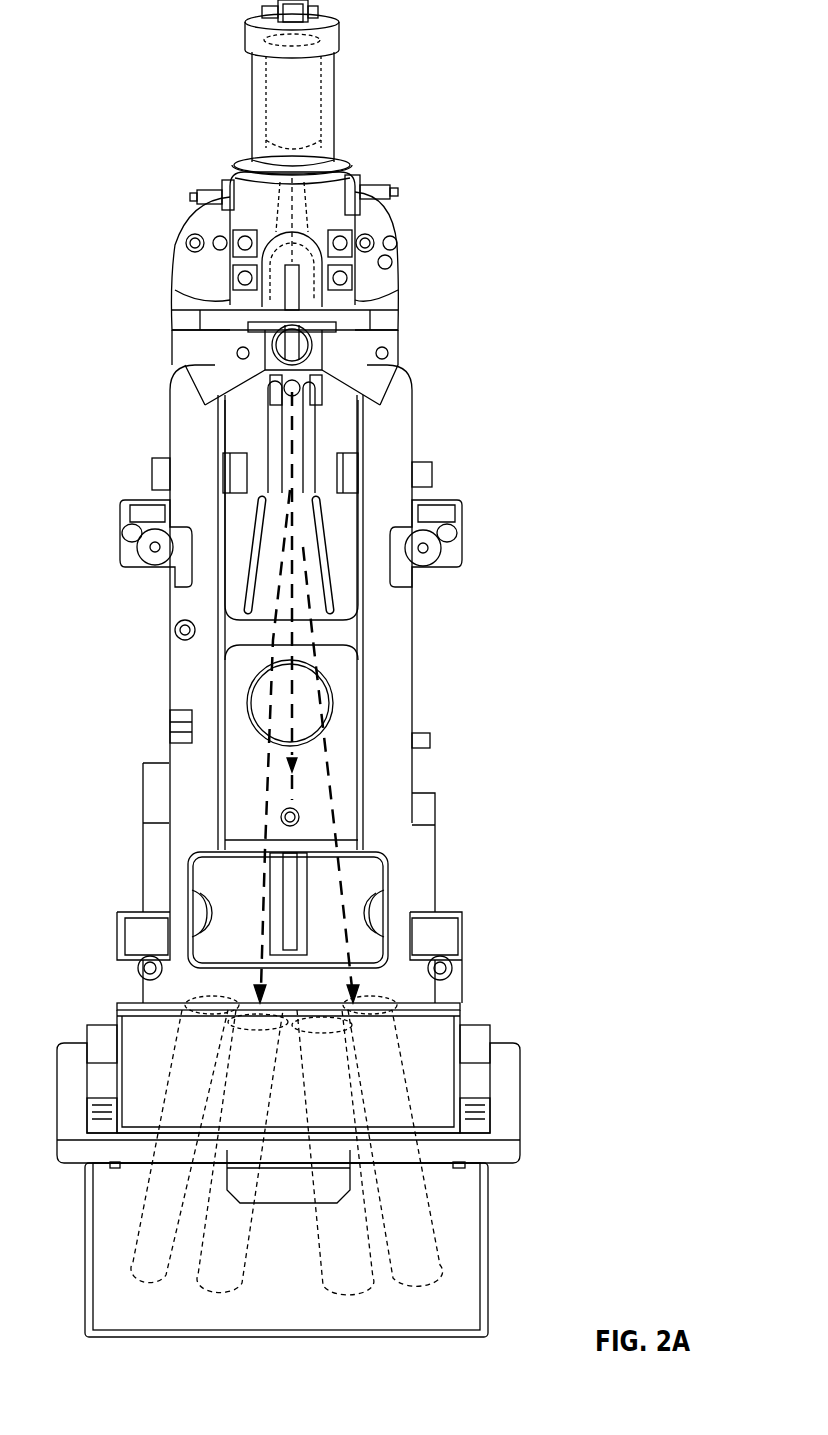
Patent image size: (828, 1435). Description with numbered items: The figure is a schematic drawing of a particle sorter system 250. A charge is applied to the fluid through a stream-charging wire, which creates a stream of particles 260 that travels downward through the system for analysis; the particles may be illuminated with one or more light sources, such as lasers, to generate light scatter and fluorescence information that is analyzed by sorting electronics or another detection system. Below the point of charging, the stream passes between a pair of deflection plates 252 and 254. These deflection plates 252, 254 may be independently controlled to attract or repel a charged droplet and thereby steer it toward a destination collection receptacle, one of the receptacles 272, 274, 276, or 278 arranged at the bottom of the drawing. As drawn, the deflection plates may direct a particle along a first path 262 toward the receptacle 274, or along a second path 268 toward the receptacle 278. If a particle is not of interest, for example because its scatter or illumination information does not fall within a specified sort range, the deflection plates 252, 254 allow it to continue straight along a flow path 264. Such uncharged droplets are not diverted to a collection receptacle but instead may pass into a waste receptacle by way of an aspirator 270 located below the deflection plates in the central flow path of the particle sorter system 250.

The particle sorter system 250 is at (456, 51).
The deflection plate 252 is at (275, 410).
The deflection plate 254 is at (306, 410).
The stream of particles 260 is at (290, 700).
The first path 262 is at (268, 777).
The flow path 264 is at (310, 766).
The second path 268 is at (343, 765).
The aspirator 270 is at (293, 841).
The collection receptacle 272 is at (173, 1080).
The collection receptacle 274 is at (227, 1080).
The collection receptacle 276 is at (298, 1082).
The collection receptacle 278 is at (395, 1060).